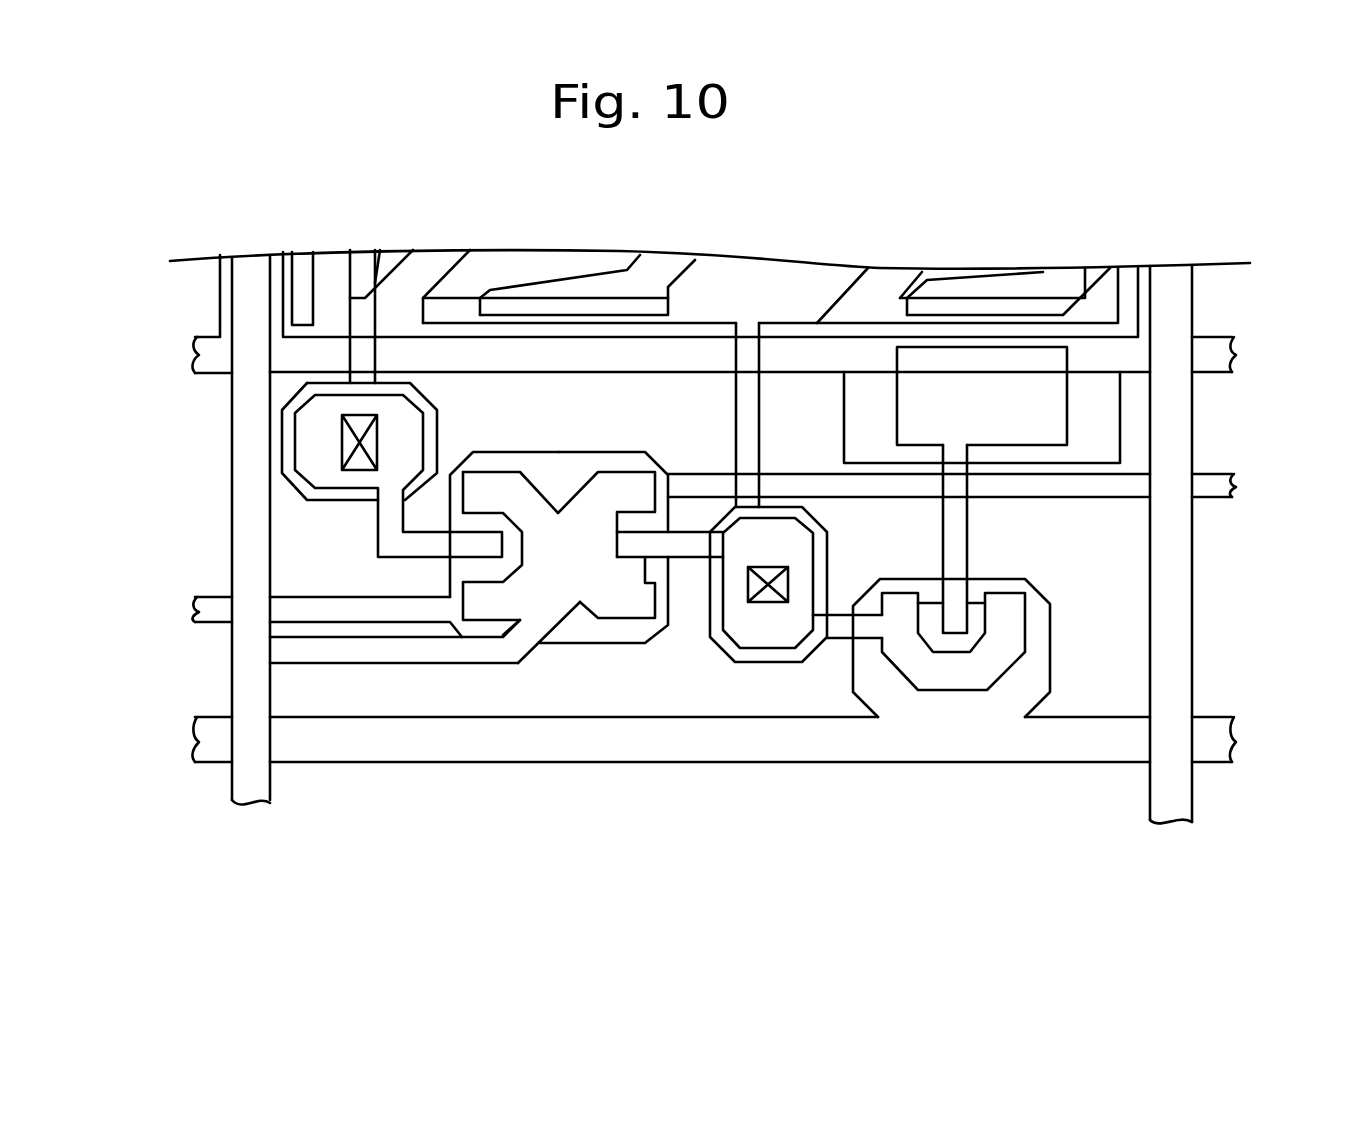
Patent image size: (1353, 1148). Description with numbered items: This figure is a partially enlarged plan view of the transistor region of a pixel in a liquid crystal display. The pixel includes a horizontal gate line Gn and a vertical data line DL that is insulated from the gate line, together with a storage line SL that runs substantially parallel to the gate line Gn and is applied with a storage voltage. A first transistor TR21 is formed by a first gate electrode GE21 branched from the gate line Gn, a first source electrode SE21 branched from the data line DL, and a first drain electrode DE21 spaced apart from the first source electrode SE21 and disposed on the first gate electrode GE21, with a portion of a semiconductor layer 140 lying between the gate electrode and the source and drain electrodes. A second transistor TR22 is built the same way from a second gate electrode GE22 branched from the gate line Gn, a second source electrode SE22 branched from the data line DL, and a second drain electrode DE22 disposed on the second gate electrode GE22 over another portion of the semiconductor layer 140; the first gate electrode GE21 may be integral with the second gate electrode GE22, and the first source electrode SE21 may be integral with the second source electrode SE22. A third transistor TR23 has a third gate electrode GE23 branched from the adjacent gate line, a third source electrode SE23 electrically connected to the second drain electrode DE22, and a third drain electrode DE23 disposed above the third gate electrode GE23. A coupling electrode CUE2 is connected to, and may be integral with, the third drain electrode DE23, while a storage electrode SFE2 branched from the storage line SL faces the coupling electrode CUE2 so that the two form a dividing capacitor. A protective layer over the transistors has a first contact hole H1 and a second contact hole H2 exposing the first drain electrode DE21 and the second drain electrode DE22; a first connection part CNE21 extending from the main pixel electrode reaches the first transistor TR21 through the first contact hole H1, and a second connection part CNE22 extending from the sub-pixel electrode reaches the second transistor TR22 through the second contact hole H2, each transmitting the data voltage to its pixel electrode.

The storage line SL is at (205, 352).
The data line DL is at (245, 695).
The gate line Gn is at (205, 612).
The second connection part CNE22 is at (362, 357).
The first connection part CNE21 is at (750, 420).
The coupling electrode CUE2 is at (1052, 390).
The storage electrode SFE2 is at (1095, 425).
The first contact hole H1 is at (345, 448).
The second contact hole H2 is at (768, 597).
The first drain electrode DE21 is at (462, 545).
The first source electrode SE21 is at (497, 653).
The first gate electrode GE21 is at (573, 630).
The first transistor TR21 is at (363, 645).
The semiconductor layer 140 is at (619, 566).
The second gate electrode GE22 is at (618, 632).
The second source electrode SE22 is at (634, 602).
The second drain electrode DE22 is at (662, 544).
The second transistor TR22 is at (711, 680).
The third source electrode SE23 is at (905, 665).
The third gate electrode GE23 is at (947, 705).
The third drain electrode DE23 is at (958, 625).
The third transistor TR23 is at (955, 676).